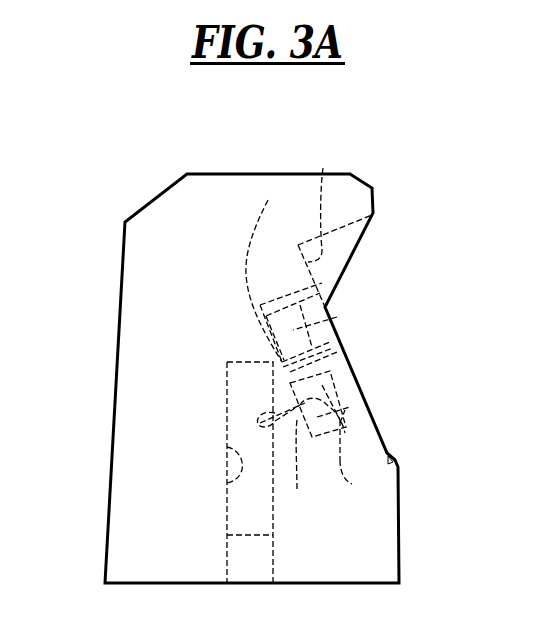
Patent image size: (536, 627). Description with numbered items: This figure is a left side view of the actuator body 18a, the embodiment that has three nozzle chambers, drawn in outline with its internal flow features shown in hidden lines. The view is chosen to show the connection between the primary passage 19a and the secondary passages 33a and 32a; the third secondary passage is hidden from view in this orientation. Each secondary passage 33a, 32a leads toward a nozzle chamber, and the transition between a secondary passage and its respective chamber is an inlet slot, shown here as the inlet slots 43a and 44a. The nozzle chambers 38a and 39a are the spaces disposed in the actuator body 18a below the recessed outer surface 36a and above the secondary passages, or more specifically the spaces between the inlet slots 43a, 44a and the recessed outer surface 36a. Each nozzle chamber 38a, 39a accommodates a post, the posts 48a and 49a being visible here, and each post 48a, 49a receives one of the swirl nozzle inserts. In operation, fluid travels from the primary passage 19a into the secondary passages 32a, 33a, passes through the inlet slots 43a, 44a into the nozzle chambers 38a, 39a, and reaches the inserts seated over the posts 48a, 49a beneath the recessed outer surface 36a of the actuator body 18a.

The actuator body 18a is at (182, 146).
The primary passage 19a is at (227, 483).
The secondary passage 32a is at (268, 200).
The recessed outer surface 36a is at (323, 168).
The nozzle chamber 38a is at (335, 280).
The inlet slot 43a is at (337, 347).
The post 48a is at (337, 317).
The post 49a is at (355, 380).
The secondary passage 33a is at (297, 490).
The nozzle chamber 39a is at (340, 423).
The inlet slot 44a is at (352, 484).